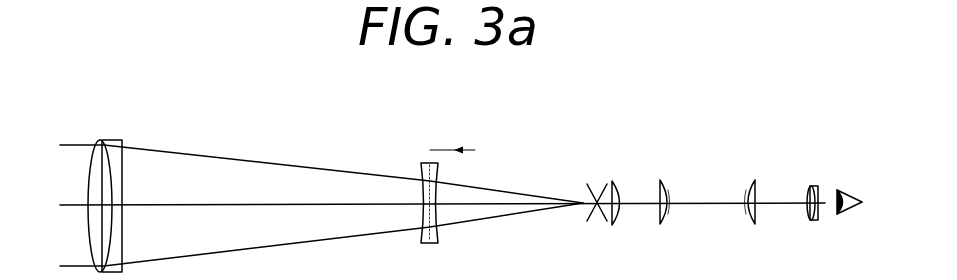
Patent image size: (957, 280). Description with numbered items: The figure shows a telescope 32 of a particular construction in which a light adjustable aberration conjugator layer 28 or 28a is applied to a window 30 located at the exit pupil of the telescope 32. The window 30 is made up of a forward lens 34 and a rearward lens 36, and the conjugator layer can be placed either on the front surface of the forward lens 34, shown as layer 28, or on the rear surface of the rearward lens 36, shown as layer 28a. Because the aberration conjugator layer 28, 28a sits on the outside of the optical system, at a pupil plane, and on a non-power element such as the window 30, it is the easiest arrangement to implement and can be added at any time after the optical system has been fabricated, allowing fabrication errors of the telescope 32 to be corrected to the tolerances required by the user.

The light adjustable aberration conjugator layer 28 is at (660, 190).
The light adjustable aberration conjugator layer 28a is at (756, 190).
The window 30 is at (757, 167).
The telescope 32 is at (243, 158).
The forward lens 34 is at (668, 192).
The rearward lens 36 is at (745, 192).